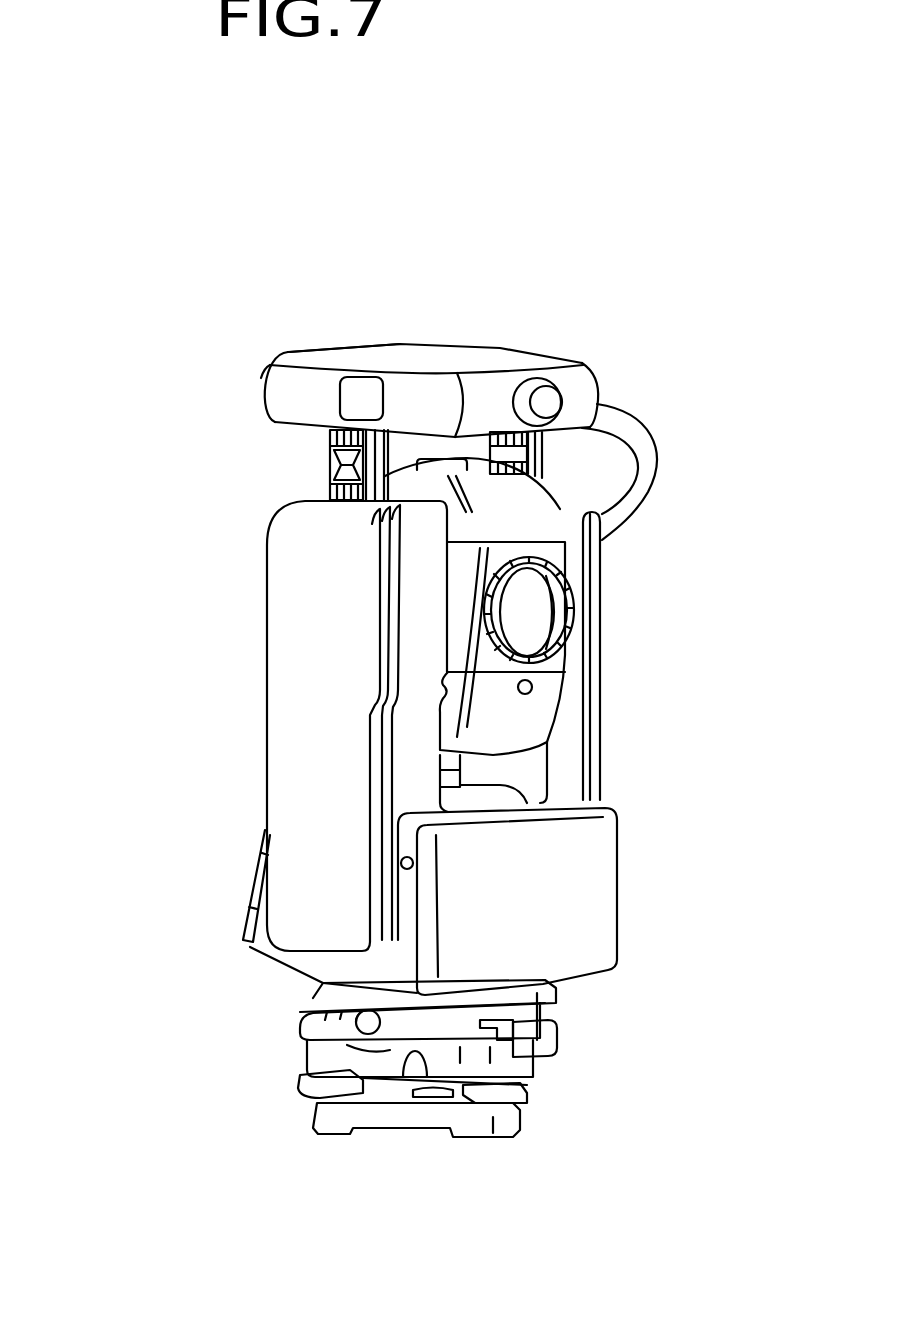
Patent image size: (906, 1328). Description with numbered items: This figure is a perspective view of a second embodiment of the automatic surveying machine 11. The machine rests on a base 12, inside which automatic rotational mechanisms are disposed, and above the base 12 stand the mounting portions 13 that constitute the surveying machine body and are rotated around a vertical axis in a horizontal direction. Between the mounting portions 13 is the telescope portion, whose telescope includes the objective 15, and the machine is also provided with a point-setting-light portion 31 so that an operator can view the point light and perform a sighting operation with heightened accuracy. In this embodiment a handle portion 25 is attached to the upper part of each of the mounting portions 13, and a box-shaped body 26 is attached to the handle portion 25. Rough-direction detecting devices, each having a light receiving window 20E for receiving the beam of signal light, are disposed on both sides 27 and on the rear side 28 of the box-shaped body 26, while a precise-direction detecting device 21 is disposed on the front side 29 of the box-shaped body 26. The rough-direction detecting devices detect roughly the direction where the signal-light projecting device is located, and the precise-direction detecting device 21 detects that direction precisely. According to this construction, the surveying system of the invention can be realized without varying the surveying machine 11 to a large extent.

The automatic surveying machine 11 is at (646, 531).
The base 12 is at (550, 1000).
The mounting portion 13 is at (297, 732).
The objective 15 is at (530, 591).
The light receiving window 20E is at (357, 393).
The precise-direction detecting device 21 is at (535, 404).
The handle portion 25 is at (327, 472).
The box-shaped body 26 is at (458, 355).
The both sides of the box-shaped body 27 is at (280, 387).
The rear side of the box-shaped body 28 is at (327, 350).
The front side of the box-shaped body 29 is at (490, 392).
The point-setting-light portion 31 is at (532, 684).